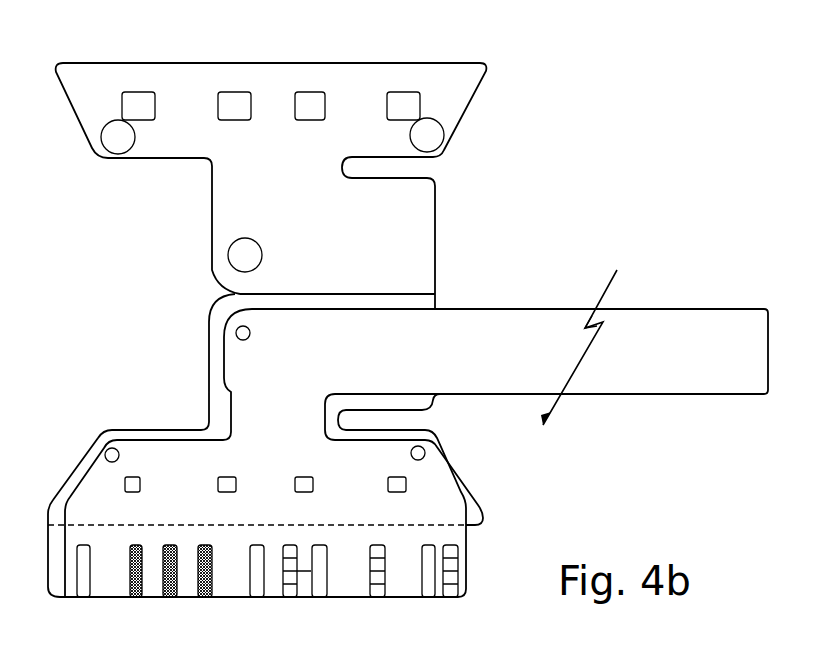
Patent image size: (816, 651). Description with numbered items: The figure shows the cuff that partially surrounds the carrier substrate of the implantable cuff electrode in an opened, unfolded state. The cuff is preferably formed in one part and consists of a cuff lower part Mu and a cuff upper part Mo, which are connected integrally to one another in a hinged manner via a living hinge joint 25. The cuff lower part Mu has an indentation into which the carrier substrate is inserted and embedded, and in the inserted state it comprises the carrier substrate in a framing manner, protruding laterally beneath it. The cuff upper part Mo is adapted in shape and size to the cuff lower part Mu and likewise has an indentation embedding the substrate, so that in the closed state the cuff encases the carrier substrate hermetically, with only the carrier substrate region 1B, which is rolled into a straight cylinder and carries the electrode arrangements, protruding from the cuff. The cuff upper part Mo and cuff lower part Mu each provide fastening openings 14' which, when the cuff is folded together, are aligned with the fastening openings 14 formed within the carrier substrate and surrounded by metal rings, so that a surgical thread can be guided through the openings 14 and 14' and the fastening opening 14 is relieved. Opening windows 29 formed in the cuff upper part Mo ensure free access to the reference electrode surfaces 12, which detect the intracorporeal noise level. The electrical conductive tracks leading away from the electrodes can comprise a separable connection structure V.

The opening windows 29 is at (232, 100).
The fastening openings 14' is at (298, 195).
The fastening openings 14 is at (288, 394).
The reference electrode surfaces 12 is at (228, 484).
The living hinge joint 25 is at (192, 308).
The cuff upper part Mo is at (476, 103).
The cuff lower part Mu is at (72, 478).
The carrier substrate region 1B is at (48, 560).
The separable connection structure V is at (579, 359).